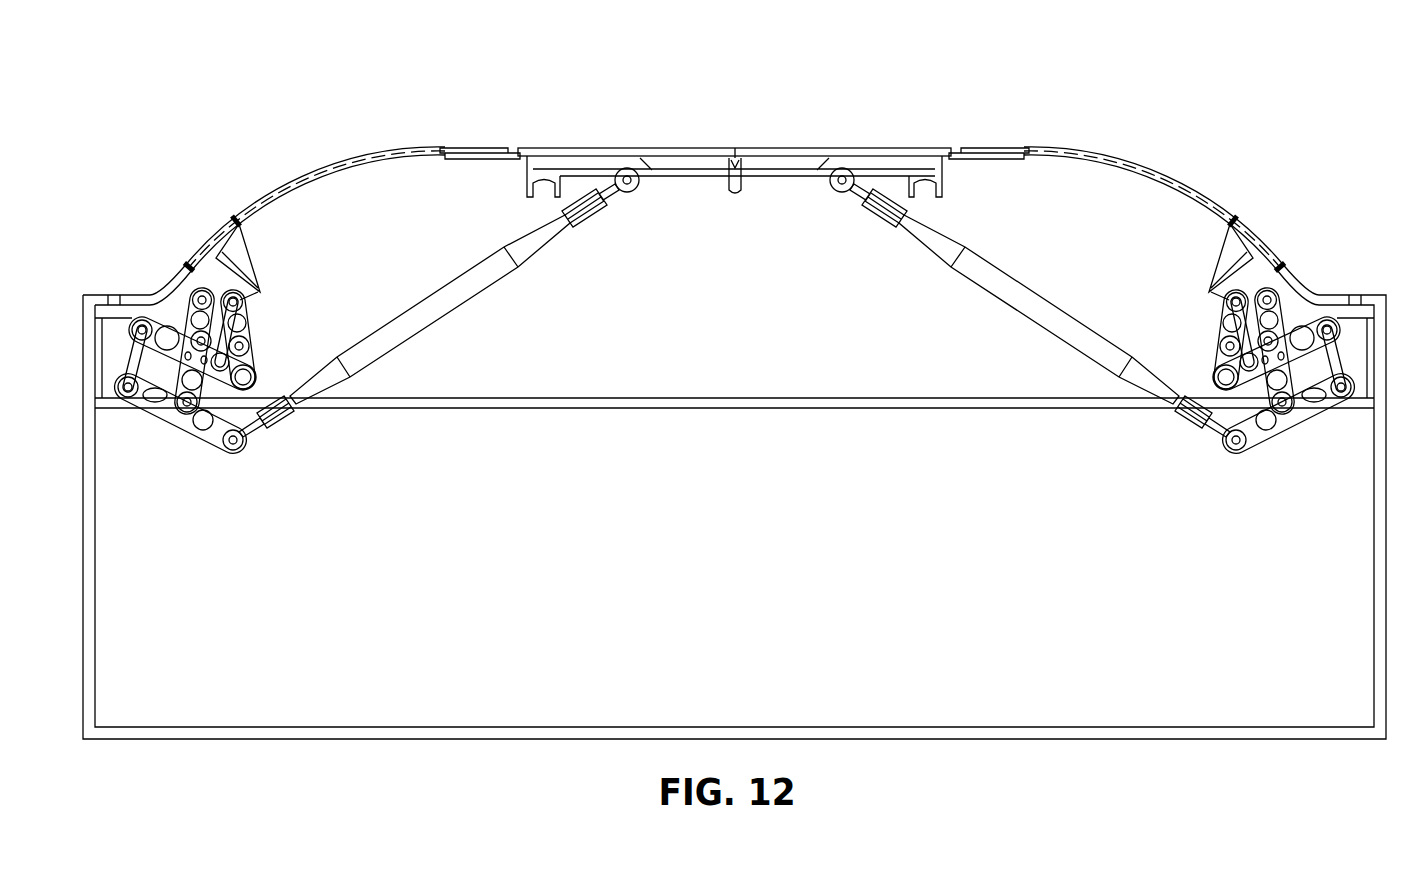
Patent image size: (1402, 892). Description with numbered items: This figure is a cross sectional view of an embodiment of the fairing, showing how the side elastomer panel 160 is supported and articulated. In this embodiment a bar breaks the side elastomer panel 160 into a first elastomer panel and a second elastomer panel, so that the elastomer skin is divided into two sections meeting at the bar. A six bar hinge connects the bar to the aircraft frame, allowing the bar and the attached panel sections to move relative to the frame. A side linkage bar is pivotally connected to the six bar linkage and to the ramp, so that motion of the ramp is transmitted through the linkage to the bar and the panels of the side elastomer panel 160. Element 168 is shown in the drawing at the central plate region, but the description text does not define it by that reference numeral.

The side elastomer panel 160 is at (233, 92).
The center mounting plate 168 is at (717, 148).